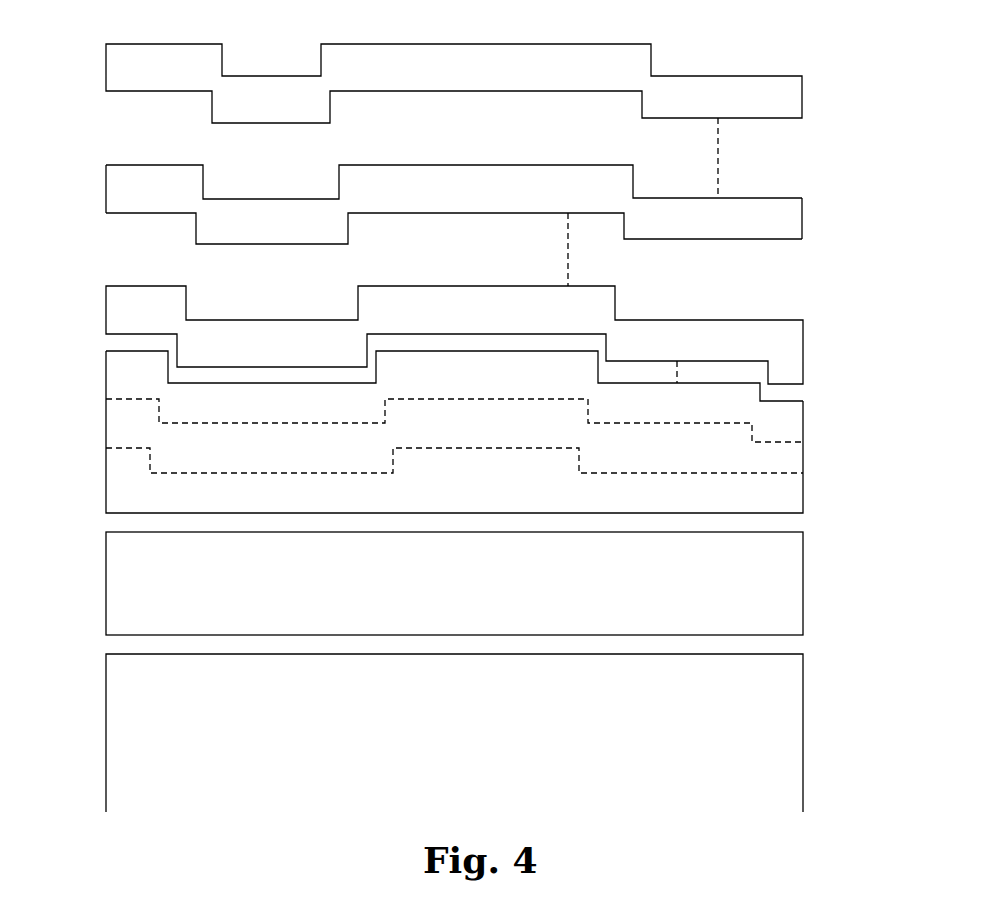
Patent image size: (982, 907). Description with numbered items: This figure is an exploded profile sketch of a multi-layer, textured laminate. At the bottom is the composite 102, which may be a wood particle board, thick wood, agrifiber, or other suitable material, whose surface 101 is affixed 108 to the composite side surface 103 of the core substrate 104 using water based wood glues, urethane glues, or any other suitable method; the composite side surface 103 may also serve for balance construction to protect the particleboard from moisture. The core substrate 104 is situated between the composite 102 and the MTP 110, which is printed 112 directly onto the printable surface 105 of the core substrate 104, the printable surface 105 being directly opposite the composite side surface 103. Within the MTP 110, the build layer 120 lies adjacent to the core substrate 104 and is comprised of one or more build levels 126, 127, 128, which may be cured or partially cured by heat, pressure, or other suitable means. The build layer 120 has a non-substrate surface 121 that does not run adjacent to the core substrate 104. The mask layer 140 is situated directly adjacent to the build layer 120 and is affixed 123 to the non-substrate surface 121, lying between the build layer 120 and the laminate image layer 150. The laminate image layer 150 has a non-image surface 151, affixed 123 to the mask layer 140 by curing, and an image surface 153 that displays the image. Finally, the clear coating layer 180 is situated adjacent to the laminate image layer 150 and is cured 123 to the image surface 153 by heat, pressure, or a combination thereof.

The surface of core substrate 101 is at (408, 677).
The core substrate 102 is at (454, 733).
The composite side surface 103 is at (435, 613).
The core substrate 104 is at (454, 583).
The printable surface 105 is at (363, 555).
The affixing 108 is at (611, 695).
The MTP 110 is at (44, 339).
The printing 112 is at (331, 565).
The build layer 120 is at (454, 432).
The non-substrate surface 121 is at (488, 375).
The affixing 123 is at (671, 250).
The build level 126 is at (433, 376).
The build level 127 is at (433, 421).
The build level 128 is at (433, 473).
The mask layer 140 is at (476, 335).
The laminate image layer 150 is at (476, 191).
The non-image surface 151 is at (454, 242).
The image surface 153 is at (454, 155).
The clear coating layer 180 is at (476, 83).